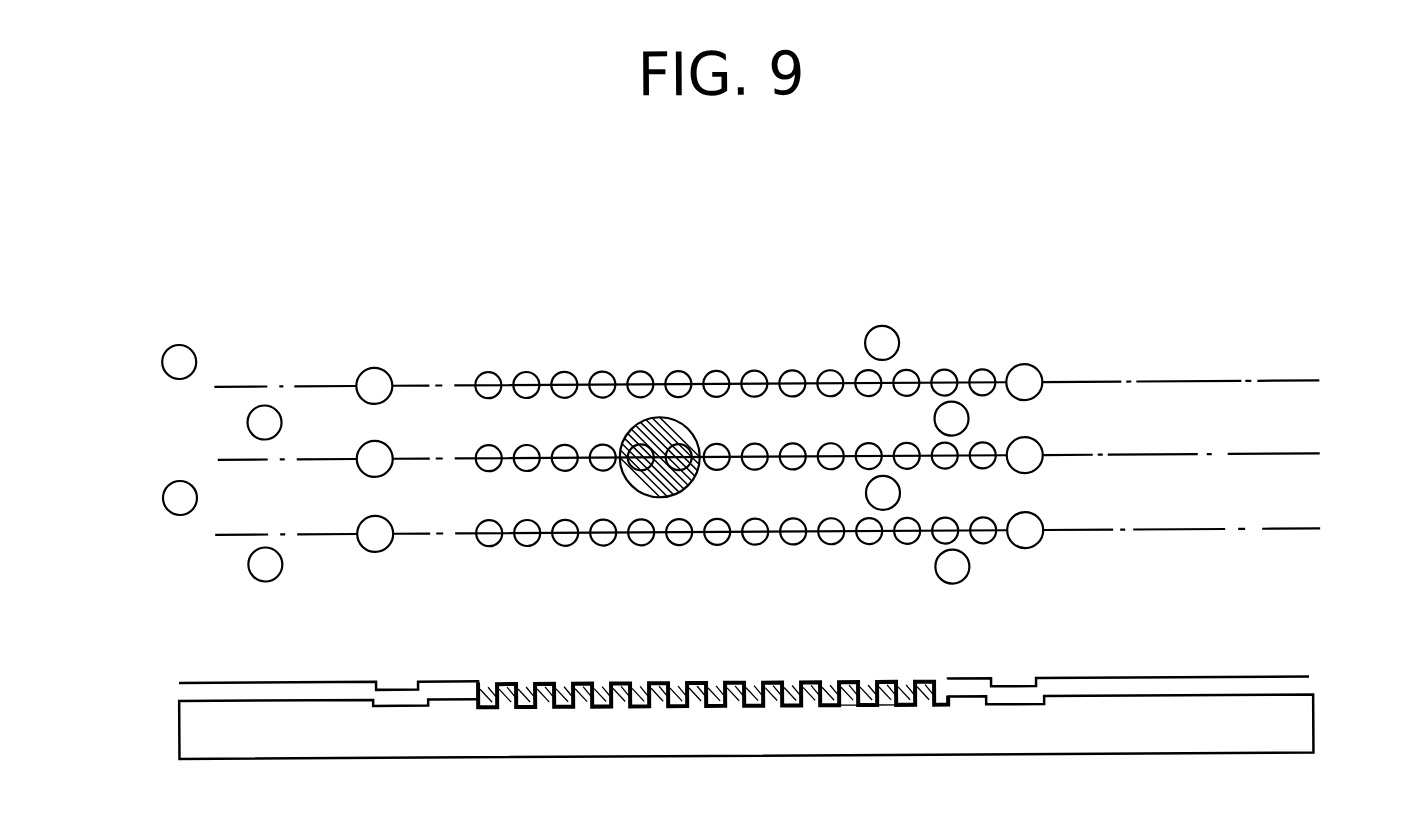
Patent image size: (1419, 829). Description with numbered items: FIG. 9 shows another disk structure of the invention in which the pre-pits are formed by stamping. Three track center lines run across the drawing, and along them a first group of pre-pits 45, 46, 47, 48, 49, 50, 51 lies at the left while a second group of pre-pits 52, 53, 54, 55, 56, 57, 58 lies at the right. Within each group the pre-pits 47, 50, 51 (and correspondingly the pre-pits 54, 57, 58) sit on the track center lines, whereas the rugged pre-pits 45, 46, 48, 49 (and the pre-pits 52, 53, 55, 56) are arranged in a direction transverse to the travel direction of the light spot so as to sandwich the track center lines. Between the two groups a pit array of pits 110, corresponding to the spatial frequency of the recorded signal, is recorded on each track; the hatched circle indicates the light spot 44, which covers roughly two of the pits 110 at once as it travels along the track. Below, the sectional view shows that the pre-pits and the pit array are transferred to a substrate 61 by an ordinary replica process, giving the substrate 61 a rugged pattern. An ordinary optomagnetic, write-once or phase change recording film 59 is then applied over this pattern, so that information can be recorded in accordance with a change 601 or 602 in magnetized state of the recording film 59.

The spot 44 is at (697, 414).
The pre-pit 45 is at (200, 337).
The pre-pit 46 is at (282, 416).
The pre-pit 47 is at (392, 426).
The pre-pit 48 is at (197, 491).
The pre-pit 49 is at (282, 559).
The pre-pit 50 is at (400, 357).
The pre-pit 51 is at (387, 546).
The pre-pit 52 is at (906, 324).
The pre-pit 53 is at (968, 418).
The pre-pit 54 is at (1038, 445).
The pre-pit 55 is at (899, 496).
The pre-pit 56 is at (965, 555).
The pre-pit 57 is at (1050, 358).
The pre-pit 58 is at (1038, 519).
The recording film 59 is at (1300, 686).
The substrate 61 is at (1300, 736).
The pits 110 is at (490, 371).
The change in magnetized state 601 is at (878, 681).
The change in magnetized state 602 is at (845, 682).